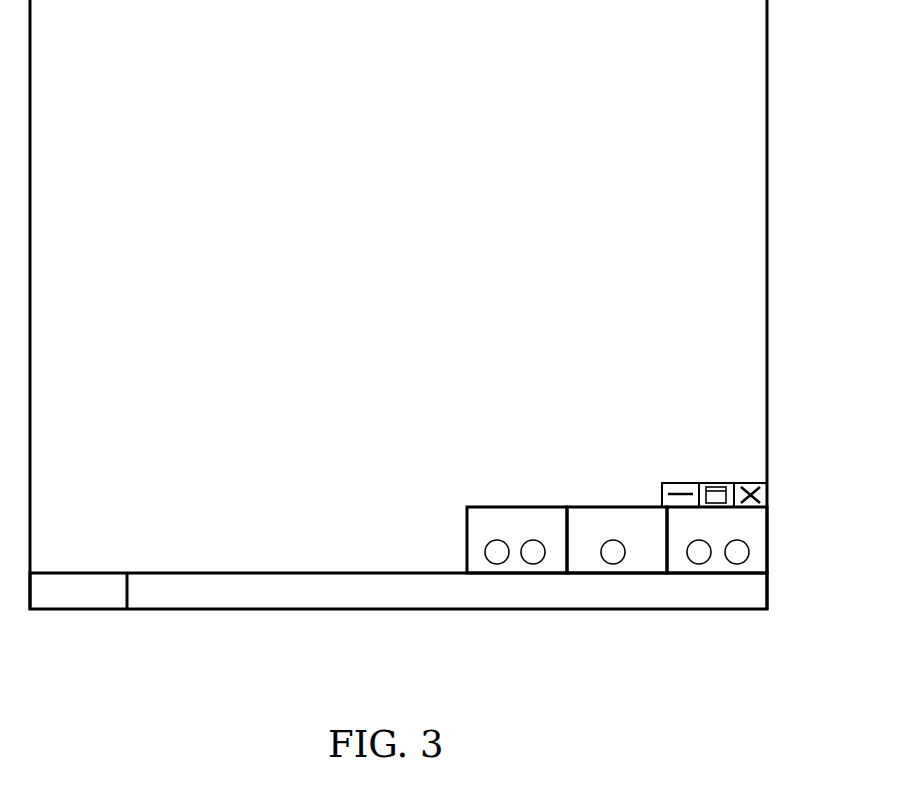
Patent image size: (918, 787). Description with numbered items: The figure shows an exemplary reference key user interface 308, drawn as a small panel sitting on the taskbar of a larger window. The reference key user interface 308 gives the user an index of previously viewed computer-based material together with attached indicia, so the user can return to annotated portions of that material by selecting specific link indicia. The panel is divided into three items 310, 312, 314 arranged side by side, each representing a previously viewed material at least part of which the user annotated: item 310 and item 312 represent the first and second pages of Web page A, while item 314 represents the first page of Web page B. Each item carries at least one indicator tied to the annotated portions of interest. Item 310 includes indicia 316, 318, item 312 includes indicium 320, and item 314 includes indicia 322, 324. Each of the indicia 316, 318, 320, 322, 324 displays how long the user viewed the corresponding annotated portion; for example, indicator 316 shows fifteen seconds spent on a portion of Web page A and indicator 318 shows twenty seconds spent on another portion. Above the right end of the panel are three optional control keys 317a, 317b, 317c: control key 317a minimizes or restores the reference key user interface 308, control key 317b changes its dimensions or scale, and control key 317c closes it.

The reference key user interface 308 is at (398, 490).
The item 310 is at (513, 506).
The item 312 is at (608, 506).
The item 314 is at (769, 548).
The indicium 316 is at (497, 564).
The indicium 318 is at (543, 560).
The indicium 320 is at (614, 564).
The indicium 322 is at (700, 564).
The indicium 324 is at (746, 560).
The control key 317a is at (662, 482).
The control key 317b is at (713, 482).
The control key 317c is at (745, 482).